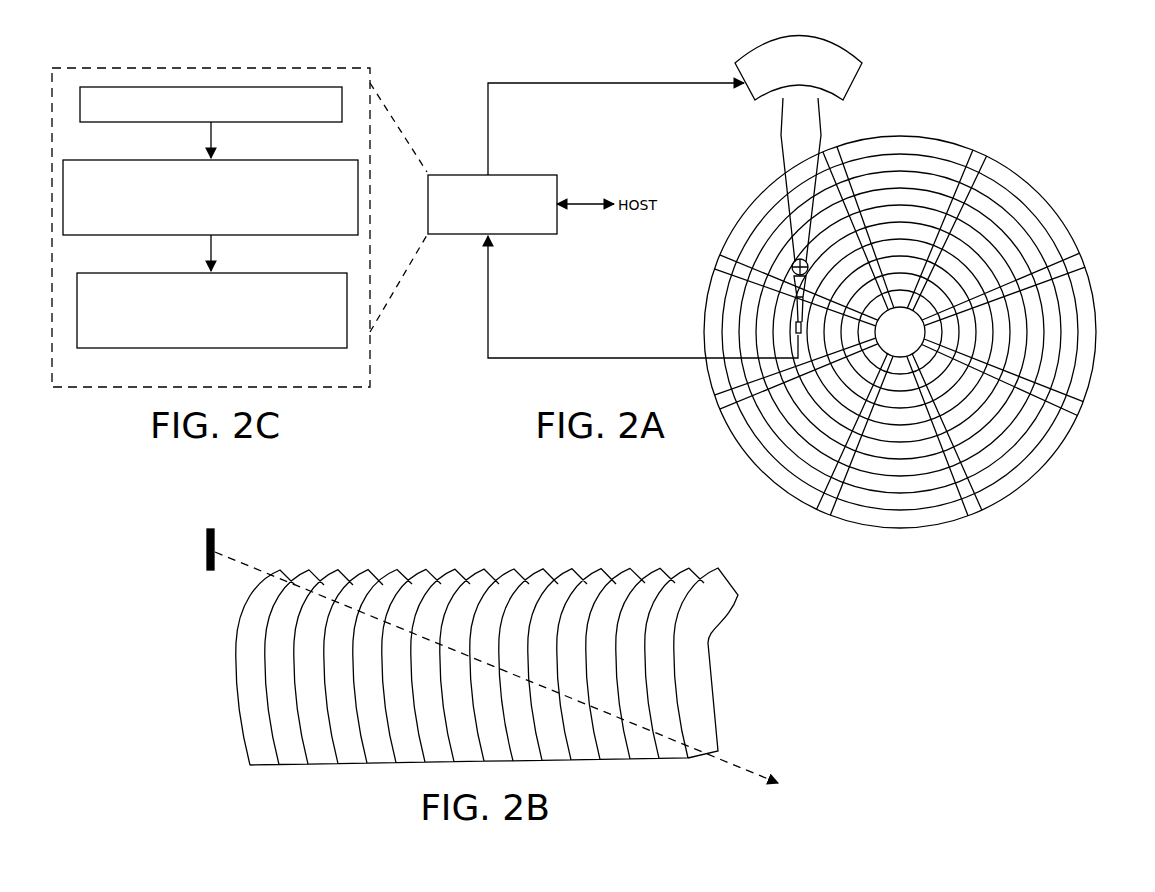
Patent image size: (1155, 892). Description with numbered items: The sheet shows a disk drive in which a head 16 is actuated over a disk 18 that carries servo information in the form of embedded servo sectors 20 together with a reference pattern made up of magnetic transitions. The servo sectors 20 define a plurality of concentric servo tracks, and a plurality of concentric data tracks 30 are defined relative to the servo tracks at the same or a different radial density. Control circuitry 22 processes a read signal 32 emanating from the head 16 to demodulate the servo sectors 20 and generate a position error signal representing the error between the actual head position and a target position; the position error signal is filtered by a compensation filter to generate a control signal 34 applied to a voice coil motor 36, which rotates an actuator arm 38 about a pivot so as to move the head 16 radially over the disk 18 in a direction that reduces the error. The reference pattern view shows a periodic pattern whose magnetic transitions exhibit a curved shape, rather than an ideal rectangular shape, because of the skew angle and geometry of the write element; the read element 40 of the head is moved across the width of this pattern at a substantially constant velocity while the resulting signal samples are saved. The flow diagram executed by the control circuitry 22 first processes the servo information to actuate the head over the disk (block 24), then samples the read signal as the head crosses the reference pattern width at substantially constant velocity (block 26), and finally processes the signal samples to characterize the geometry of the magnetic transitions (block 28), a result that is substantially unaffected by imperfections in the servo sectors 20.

In FIG. 2A, the head 16 is at (793, 327).
In FIG. 2A, the disk 18 is at (1040, 175).
In FIG. 2A, the servo sectors 20 is at (903, 335).
In FIG. 2A, the control circuitry 22 is at (525, 174).
In FIG. 2C, the actuate head over disk block 24 is at (300, 122).
In FIG. 2C, the sample read signal block 26 is at (308, 235).
In FIG. 2C, the process signal samples block 28 is at (300, 348).
In FIG. 2A, the data tracks 30 is at (888, 152).
In FIG. 2A, the read signal 32 is at (580, 357).
In FIG. 2A, the control signal 34 is at (488, 124).
In FIG. 2A, the voice coil motor 36 is at (744, 95).
In FIG. 2A, the actuator arm 38 is at (781, 152).
In FIG. 2B, the read element 40 is at (207, 540).